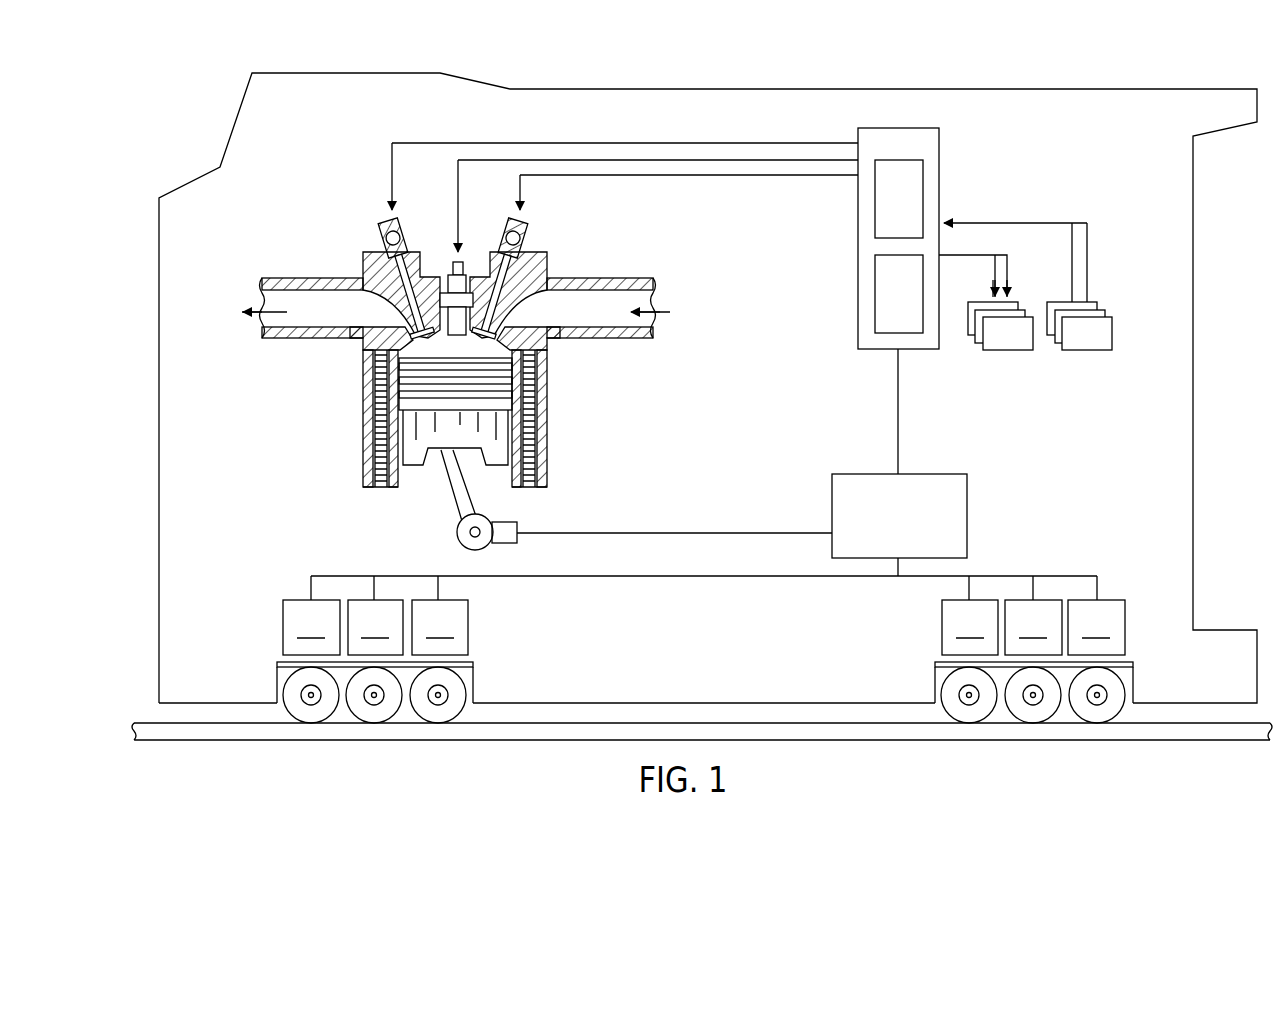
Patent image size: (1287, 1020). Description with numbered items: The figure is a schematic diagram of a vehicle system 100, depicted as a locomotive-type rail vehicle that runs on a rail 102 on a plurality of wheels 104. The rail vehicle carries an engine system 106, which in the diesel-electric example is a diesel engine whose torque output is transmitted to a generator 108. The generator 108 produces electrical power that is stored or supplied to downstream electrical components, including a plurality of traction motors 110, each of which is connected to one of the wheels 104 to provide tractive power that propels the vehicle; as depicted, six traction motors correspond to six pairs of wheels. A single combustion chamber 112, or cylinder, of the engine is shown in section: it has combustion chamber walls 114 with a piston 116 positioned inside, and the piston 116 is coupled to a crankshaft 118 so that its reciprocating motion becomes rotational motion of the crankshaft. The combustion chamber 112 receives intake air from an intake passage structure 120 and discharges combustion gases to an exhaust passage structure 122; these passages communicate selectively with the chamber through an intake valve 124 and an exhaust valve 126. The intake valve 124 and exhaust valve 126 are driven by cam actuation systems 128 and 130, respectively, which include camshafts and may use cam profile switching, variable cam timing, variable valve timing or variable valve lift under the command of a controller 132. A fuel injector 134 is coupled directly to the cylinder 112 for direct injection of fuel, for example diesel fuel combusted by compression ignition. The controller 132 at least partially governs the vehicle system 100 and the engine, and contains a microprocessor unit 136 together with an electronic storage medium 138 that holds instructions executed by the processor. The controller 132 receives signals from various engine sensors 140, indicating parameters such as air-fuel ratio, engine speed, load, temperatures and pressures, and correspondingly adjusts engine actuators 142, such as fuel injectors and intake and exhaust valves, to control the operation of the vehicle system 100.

The vehicle system 100 is at (176, 106).
The rail 102 is at (1193, 740).
The wheels 104 is at (461, 688).
The engine system 106 is at (296, 190).
The generator 108 is at (884, 528).
The traction motors 110 is at (704, 615).
The combustion chamber 112 is at (438, 358).
The combustion chamber walls 114 is at (400, 490).
The piston 116 is at (440, 437).
The crankshaft 118 is at (497, 523).
The intake passage structure 120 is at (556, 319).
The exhaust passage structure 122 is at (329, 319).
The intake valve 124 is at (507, 310).
The exhaust valve 126 is at (405, 310).
The cam actuation system 128 is at (511, 232).
The cam actuation system 130 is at (396, 232).
The controller 132 is at (884, 151).
The fuel injector 134 is at (463, 268).
The microprocessor unit 136 is at (885, 211).
The electronic storage medium 138 is at (885, 306).
The engine sensors 140 is at (1028, 286).
The engine actuators 142 is at (986, 302).